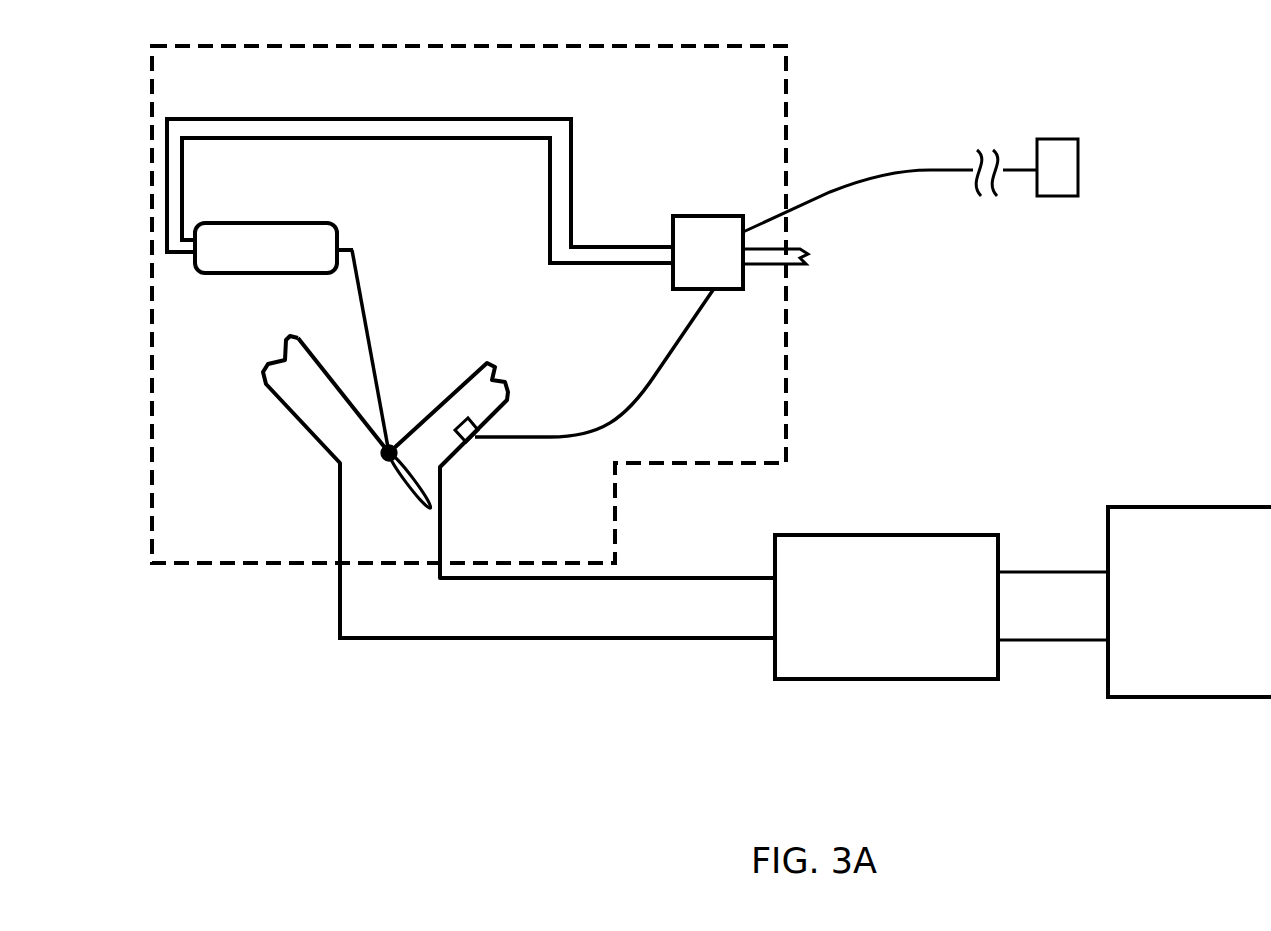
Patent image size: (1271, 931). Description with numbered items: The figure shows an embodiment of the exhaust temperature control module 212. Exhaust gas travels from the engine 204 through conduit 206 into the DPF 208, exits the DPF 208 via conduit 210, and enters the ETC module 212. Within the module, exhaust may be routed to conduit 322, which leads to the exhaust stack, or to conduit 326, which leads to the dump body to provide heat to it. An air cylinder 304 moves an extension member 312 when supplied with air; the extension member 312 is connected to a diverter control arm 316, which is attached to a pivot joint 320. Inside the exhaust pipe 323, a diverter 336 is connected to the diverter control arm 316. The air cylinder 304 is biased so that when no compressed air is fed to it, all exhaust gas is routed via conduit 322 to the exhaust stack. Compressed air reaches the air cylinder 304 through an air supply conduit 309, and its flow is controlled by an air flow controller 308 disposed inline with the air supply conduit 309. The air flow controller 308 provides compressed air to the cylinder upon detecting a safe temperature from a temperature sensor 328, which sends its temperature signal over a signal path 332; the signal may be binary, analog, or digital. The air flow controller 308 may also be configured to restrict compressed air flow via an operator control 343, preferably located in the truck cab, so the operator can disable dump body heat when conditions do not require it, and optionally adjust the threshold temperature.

The exhaust temperature control module 212 is at (787, 148).
The air supply conduit 309 is at (533, 118).
The air cylinder 304 is at (272, 222).
The extension member 312 is at (345, 248).
The diverter control arm 316 is at (363, 313).
The air flow controller 308 is at (729, 222).
The operator control 343 is at (1058, 139).
The conduit 322 is at (293, 393).
The exhaust pipe 323 is at (345, 527).
The conduit 326 is at (497, 395).
The pivot joint 320 is at (395, 446).
The diverter 336 is at (408, 488).
The temperature sensor 328 is at (468, 436).
The signal path 332 is at (670, 347).
The conduit 210 is at (747, 577).
The DPF 208 is at (886, 607).
The conduit 206 is at (1043, 570).
The engine 204 is at (1189, 602).